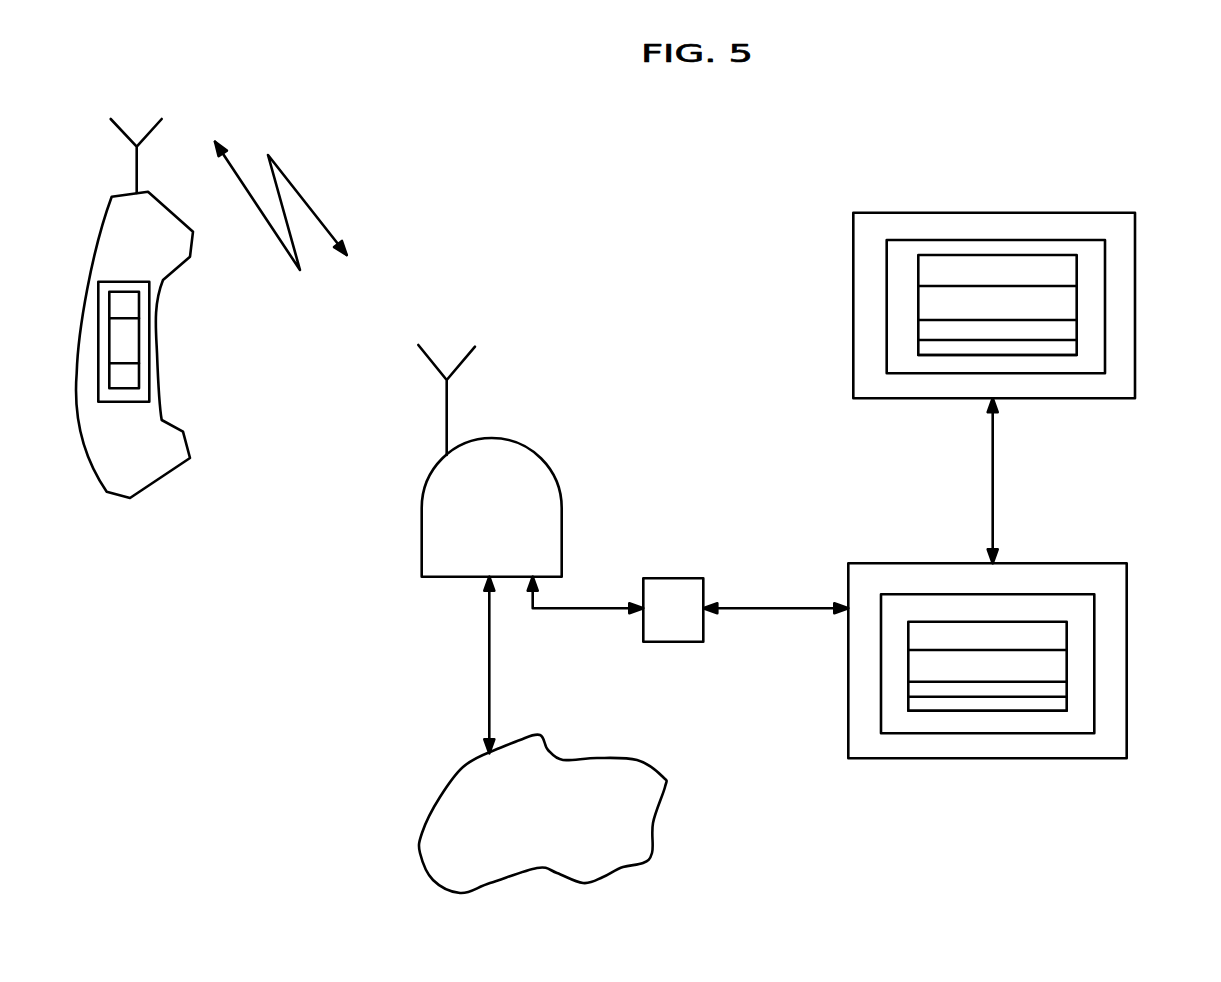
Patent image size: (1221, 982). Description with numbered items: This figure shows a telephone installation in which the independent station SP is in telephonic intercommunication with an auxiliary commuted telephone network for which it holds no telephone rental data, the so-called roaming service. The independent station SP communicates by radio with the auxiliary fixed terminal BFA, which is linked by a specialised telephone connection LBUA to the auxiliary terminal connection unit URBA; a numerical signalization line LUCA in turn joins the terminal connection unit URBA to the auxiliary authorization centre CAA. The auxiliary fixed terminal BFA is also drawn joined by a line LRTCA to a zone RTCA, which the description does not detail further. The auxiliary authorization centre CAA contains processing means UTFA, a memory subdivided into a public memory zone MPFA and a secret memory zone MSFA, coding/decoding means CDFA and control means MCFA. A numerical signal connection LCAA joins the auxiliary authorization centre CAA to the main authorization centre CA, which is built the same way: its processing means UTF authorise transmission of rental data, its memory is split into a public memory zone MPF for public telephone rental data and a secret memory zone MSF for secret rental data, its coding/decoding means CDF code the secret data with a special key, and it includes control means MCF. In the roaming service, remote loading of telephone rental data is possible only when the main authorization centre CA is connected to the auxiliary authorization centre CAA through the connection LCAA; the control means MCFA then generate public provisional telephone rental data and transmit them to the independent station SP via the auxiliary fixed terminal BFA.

The independent station SP is at (157, 467).
The auxiliary fixed terminal BFA is at (533, 483).
The auxiliary terminal connection unit URBA is at (672, 590).
The auxiliary specialised telephone connection LBUA is at (588, 607).
The auxiliary numerical signalization line LUCA is at (777, 607).
The line between base station and remote terminal LRTCA is at (487, 678).
The remote terminal area / network cloud RTCA is at (595, 768).
The numerical signal connection LCAA is at (993, 488).
The main authorization centre CA is at (1030, 212).
The processing means UTF is at (885, 315).
The secret memory zone MSF is at (965, 268).
The public memory zone MPF is at (1063, 303).
The coding/decoding means CDF is at (1053, 335).
The control means MCF is at (1058, 350).
The auxiliary authorization centre CAA is at (1025, 762).
The auxiliary processing means UTFA is at (935, 735).
The auxiliary secret memory zone MSFA is at (1023, 637).
The auxiliary public memory zone MPFA is at (1052, 665).
The auxiliary coding/decoding means CDFA is at (1052, 692).
The control means MCFA is at (1053, 707).